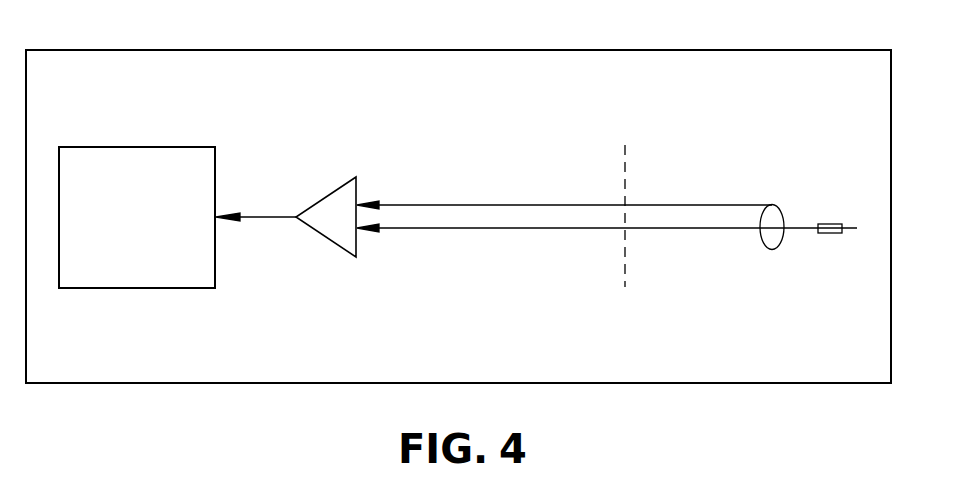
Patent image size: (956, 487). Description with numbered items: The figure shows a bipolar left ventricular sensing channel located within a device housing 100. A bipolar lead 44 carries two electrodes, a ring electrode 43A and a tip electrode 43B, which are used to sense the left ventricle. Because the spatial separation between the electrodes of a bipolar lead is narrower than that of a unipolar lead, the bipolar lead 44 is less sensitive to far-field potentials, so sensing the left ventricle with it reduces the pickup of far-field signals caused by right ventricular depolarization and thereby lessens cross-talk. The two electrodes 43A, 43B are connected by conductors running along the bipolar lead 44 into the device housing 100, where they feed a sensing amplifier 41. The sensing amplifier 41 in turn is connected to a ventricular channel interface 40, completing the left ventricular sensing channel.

The device housing 100 is at (678, 50).
The ventricular channel interface 40 is at (140, 147).
The sensing amplifier 41 is at (348, 227).
The ring electrode 43A is at (680, 204).
The tip electrode 43B is at (831, 224).
The bipolar lead 44 is at (672, 245).